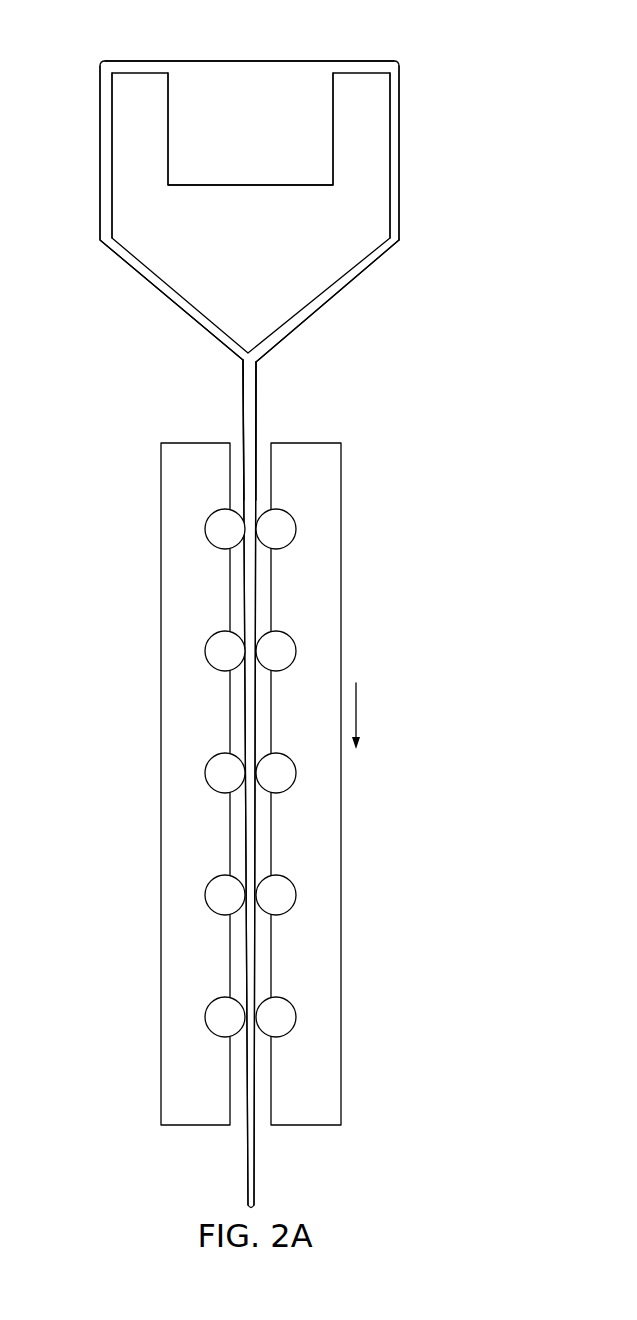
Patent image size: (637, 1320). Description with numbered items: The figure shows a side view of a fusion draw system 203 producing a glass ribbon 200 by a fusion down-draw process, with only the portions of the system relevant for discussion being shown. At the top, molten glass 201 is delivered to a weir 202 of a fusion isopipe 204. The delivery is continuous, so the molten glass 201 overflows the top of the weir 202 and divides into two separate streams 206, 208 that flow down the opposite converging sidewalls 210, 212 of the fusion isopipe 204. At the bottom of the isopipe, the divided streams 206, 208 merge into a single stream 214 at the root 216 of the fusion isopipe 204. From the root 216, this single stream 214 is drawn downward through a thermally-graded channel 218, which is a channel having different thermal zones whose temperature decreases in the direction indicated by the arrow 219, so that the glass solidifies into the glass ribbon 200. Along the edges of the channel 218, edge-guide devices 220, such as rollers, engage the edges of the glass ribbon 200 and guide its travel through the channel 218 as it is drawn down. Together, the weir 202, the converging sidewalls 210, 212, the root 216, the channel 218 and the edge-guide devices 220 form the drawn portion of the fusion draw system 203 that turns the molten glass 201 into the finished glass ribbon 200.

The glass ribbon 200 is at (250, 850).
The molten glass 201 is at (245, 67).
The weir 202 is at (207, 184).
The fusion draw system 203 is at (363, 49).
The fusion isopipe 204 is at (391, 107).
The stream 206 is at (108, 220).
The stream 208 is at (395, 230).
The converging sidewall 210 is at (112, 187).
The converging sidewall 212 is at (391, 193).
The single stream 214 is at (246, 370).
The root 216 is at (258, 363).
The thermally-graded channel 218 is at (271, 602).
The arrow 219 is at (374, 716).
The edge-guide device 220 is at (217, 516).